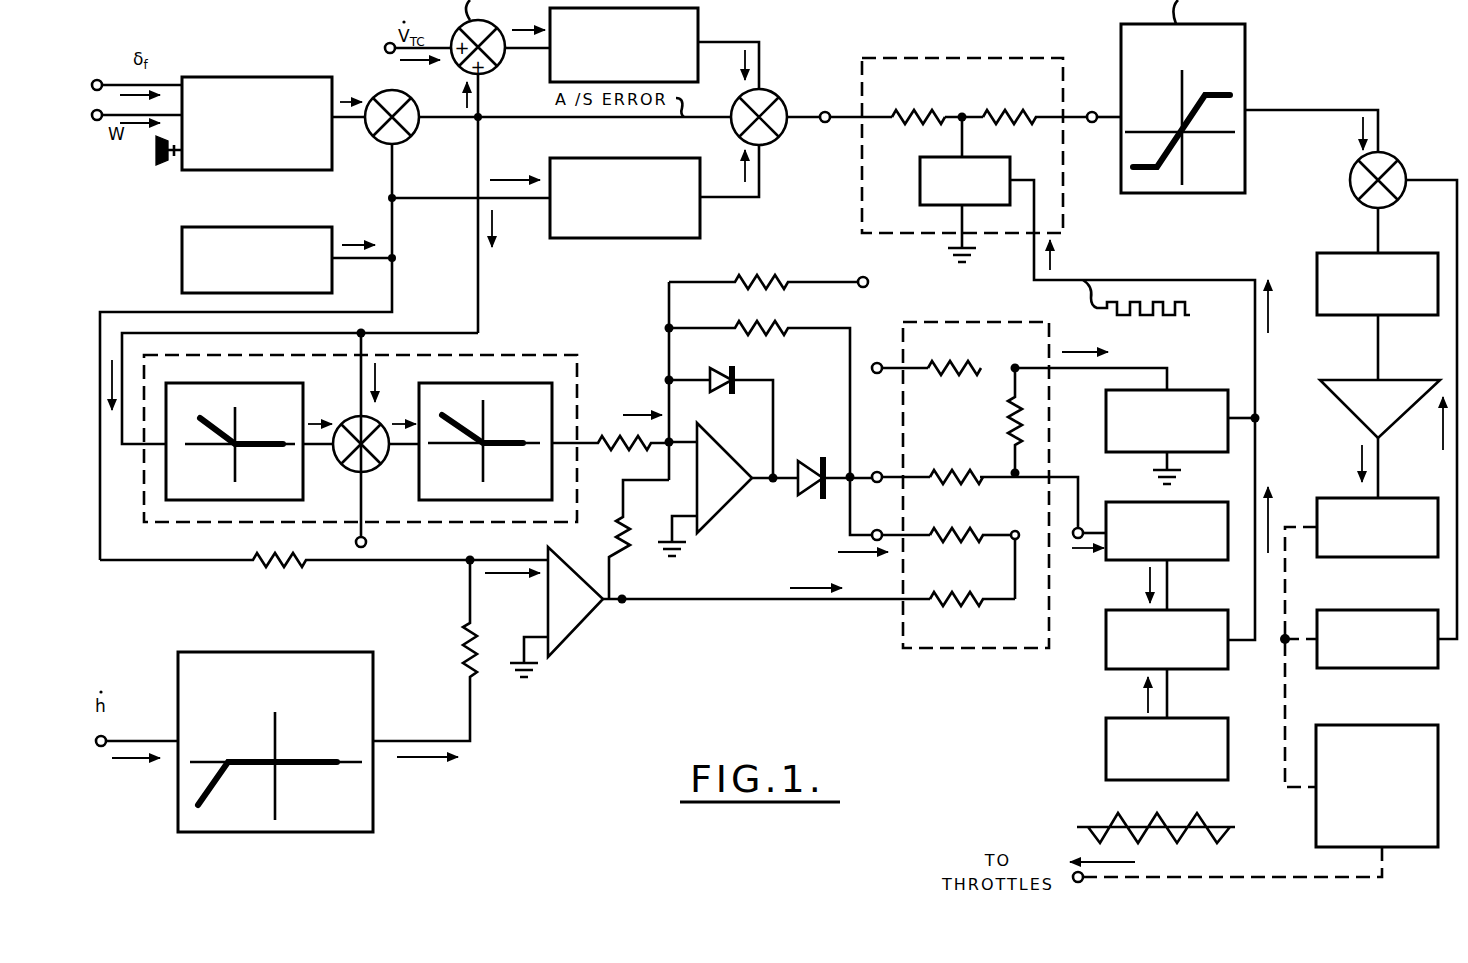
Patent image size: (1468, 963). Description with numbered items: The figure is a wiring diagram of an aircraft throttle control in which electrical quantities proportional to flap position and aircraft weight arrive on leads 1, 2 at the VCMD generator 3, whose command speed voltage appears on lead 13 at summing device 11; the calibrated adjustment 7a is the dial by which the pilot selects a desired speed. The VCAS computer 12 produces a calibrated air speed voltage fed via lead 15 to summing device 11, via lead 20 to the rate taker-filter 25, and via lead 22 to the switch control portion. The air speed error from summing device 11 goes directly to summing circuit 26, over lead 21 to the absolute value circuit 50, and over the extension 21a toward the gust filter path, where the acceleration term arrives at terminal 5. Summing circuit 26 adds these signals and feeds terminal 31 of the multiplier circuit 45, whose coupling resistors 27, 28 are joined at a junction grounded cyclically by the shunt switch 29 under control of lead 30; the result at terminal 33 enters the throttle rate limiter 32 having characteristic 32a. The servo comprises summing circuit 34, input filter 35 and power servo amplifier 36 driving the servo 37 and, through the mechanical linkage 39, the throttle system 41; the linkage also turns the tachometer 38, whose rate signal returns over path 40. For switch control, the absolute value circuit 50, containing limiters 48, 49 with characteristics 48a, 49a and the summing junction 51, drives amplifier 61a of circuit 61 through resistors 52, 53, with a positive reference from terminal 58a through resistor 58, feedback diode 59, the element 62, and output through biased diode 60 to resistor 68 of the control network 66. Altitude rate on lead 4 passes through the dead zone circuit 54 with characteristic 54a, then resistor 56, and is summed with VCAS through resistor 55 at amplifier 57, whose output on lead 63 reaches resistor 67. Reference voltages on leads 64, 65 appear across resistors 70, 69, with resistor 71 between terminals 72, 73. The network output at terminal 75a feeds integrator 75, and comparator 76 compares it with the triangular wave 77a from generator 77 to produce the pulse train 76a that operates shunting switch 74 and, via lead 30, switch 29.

The lead 1 is at (102, 82).
The lead 2 is at (96, 120).
The VCMD generator 3 is at (252, 78).
The input lead 4 is at (100, 746).
The true airspeed rate input terminal 5 is at (386, 44).
The calibrated adjustment 7a is at (158, 150).
The summation device 11 is at (385, 96).
The VCAS computer 12 is at (248, 226).
The lead 13 is at (346, 117).
The lead 15 is at (394, 163).
The lead 20 is at (394, 218).
The lead 21 is at (480, 290).
The extension of lead 21 21a is at (485, 108).
The lead 22 is at (394, 300).
The rate taker-filter 25 is at (618, 158).
The summing circuit 26 is at (783, 90).
The coupling resistor 27 is at (921, 123).
The coupling resistor 28 is at (1010, 128).
The shunt switch 29 is at (920, 188).
The lead 30 is at (1147, 280).
The terminal 31 is at (825, 124).
The throttle rate limiter 32 is at (1183, 96).
The graph 32a is at (1182, 108).
The terminal 33 is at (1089, 102).
The summing circuit 34 is at (1398, 158).
The input filter 35 is at (1346, 252).
The power servo amplifier 36 is at (1416, 382).
The servo 37 is at (1330, 498).
The tachometer 38 is at (1358, 610).
The mechanical linkage 39 is at (1285, 710).
The feedback line 40 is at (1454, 482).
The throttle system 41 is at (1316, 818).
The multiplier circuit 45 is at (956, 58).
The limiter 48 is at (303, 498).
The graph 48a is at (262, 446).
The limiter 49 is at (419, 492).
The graph 49a is at (505, 446).
The absolute value circuit 50 is at (144, 522).
The summing junction 51 is at (354, 410).
The resistor 52 is at (618, 443).
The resistor 53 is at (625, 530).
The dead zone circuit 54 is at (374, 793).
The characteristic 54a is at (318, 762).
The resistor 55 is at (276, 562).
The resistor 56 is at (466, 656).
The amplifier 57 is at (582, 622).
The resistor 58 is at (760, 282).
The terminal 58a is at (868, 280).
The diode 59 is at (732, 372).
The biased diode 60 is at (820, 458).
The circuit 61 is at (785, 583).
The amplifier 61a is at (738, 498).
The resistor 62 is at (773, 320).
The lead 63 is at (760, 602).
The lead 64 is at (880, 374).
The lead 65 is at (884, 484).
The resistor combining control network 66 is at (960, 648).
The resistor 67 is at (958, 599).
The resistor 68 is at (958, 535).
The resistor 69 is at (958, 477).
The resistor 70 is at (940, 368).
The resistor 71 is at (1006, 420).
The terminal 72 is at (1010, 532).
The terminal 73 is at (1017, 364).
The shunting switch 74 is at (1114, 412).
The integrator 75 is at (1200, 502).
The input terminal 75a is at (1075, 538).
The comparator 76 is at (1200, 610).
The pulse train 76a is at (1163, 315).
The triangular wave generator 77 is at (1106, 753).
The triangular wave 77a is at (1116, 823).